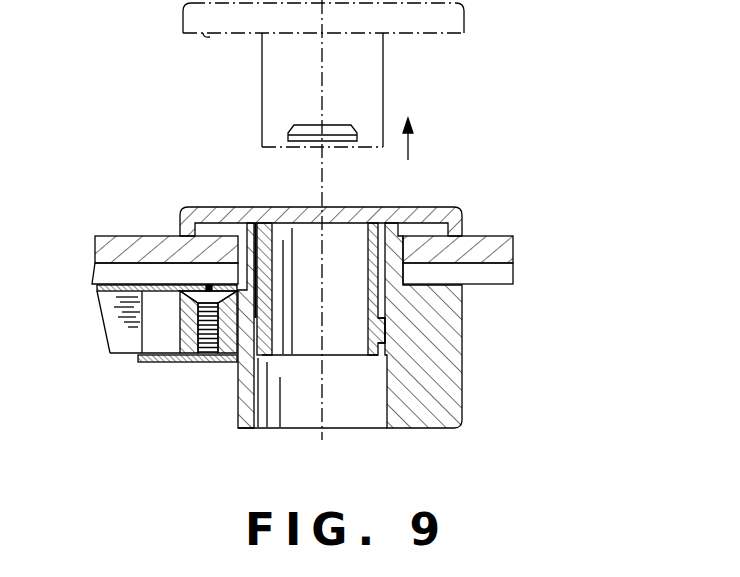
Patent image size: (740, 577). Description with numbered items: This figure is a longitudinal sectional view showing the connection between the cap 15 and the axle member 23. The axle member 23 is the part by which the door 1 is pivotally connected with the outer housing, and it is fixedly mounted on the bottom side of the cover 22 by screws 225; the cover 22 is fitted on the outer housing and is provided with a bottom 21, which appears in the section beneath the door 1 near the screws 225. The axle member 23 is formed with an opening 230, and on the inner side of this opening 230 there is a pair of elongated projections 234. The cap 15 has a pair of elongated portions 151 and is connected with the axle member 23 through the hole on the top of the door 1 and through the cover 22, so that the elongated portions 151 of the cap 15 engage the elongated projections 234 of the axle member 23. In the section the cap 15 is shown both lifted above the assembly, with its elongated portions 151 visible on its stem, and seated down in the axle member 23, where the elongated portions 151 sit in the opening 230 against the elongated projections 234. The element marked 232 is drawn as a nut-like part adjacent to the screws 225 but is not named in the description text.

The door 1 is at (500, 248).
The cap 15 is at (187, 22).
The elongated portions 151 is at (288, 136).
The bottom 21 is at (152, 363).
The cover 22 is at (97, 293).
The axle member 23 is at (453, 400).
The screws 225 is at (207, 287).
The opening 230 is at (363, 413).
The nut 232 is at (185, 325).
The elongated projections 234 is at (385, 322).